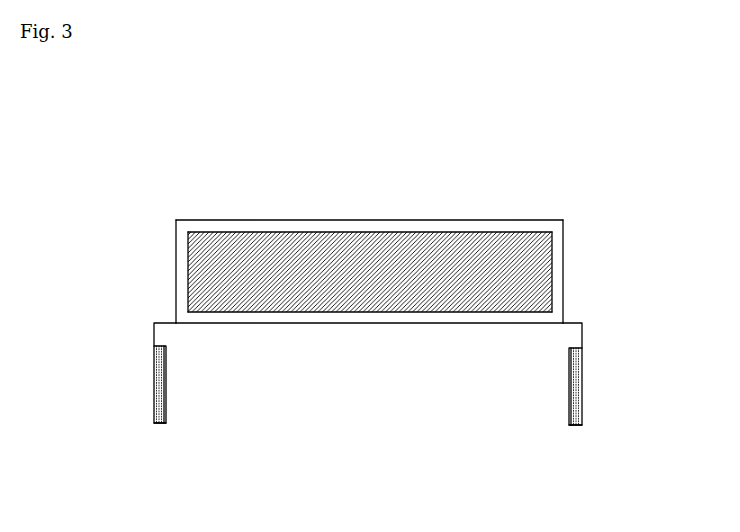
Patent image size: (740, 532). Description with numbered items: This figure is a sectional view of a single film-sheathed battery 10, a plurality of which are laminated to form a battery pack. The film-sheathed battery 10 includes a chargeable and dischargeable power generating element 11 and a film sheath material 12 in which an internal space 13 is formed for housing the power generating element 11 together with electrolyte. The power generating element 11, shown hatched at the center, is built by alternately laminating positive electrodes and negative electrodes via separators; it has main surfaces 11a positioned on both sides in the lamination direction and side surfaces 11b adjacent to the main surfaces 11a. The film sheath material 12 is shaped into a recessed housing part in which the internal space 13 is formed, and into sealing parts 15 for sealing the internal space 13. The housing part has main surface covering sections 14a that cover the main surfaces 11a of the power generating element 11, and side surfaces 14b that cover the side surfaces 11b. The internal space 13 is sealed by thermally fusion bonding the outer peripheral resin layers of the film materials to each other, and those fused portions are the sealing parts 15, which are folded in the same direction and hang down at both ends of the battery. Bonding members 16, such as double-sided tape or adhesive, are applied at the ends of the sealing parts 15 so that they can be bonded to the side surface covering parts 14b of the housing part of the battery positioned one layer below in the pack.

The film-sheathed battery 10 is at (350, 97).
The power generating element 11 is at (205, 258).
The main surfaces 11a is at (358, 230).
The side surfaces 11b is at (188, 290).
The film sheath material 12 is at (175, 310).
The internal space 13 is at (253, 228).
The main surface covering sections 14a is at (517, 220).
The side surfaces 14b is at (175, 243).
The sealing parts 15 is at (153, 373).
The bonding members 16 is at (157, 425).